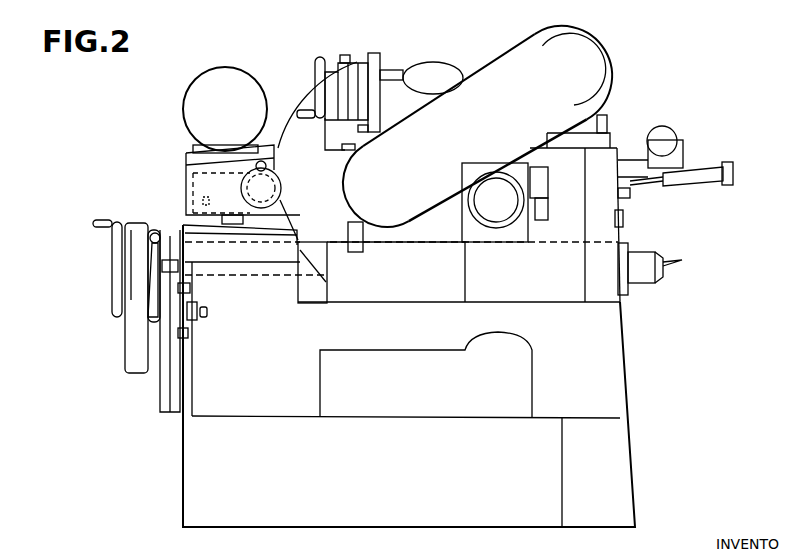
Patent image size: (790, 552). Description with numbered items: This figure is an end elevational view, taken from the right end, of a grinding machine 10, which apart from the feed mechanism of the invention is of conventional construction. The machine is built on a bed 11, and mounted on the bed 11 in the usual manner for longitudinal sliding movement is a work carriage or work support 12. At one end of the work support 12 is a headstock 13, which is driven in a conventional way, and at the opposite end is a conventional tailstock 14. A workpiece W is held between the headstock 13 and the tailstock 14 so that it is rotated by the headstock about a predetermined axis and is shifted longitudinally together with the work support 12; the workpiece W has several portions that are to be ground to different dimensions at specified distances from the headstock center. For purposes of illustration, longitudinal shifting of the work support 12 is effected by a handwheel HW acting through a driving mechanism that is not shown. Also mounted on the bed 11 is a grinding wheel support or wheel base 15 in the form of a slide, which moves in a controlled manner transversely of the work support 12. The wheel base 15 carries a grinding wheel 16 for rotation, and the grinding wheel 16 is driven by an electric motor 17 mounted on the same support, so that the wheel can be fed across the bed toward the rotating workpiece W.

The grinding machine 10 is at (672, 328).
The bed 11 is at (610, 377).
The work carriage or support 12 is at (183, 232).
The headstock 13 is at (192, 150).
The tailstock 14 is at (186, 186).
The grinding wheel support or wheel base 15 is at (408, 232).
The grinding wheel 16 is at (340, 194).
The electric motor 17 is at (597, 52).
The handwheel HW is at (110, 273).
The workpiece W is at (266, 184).